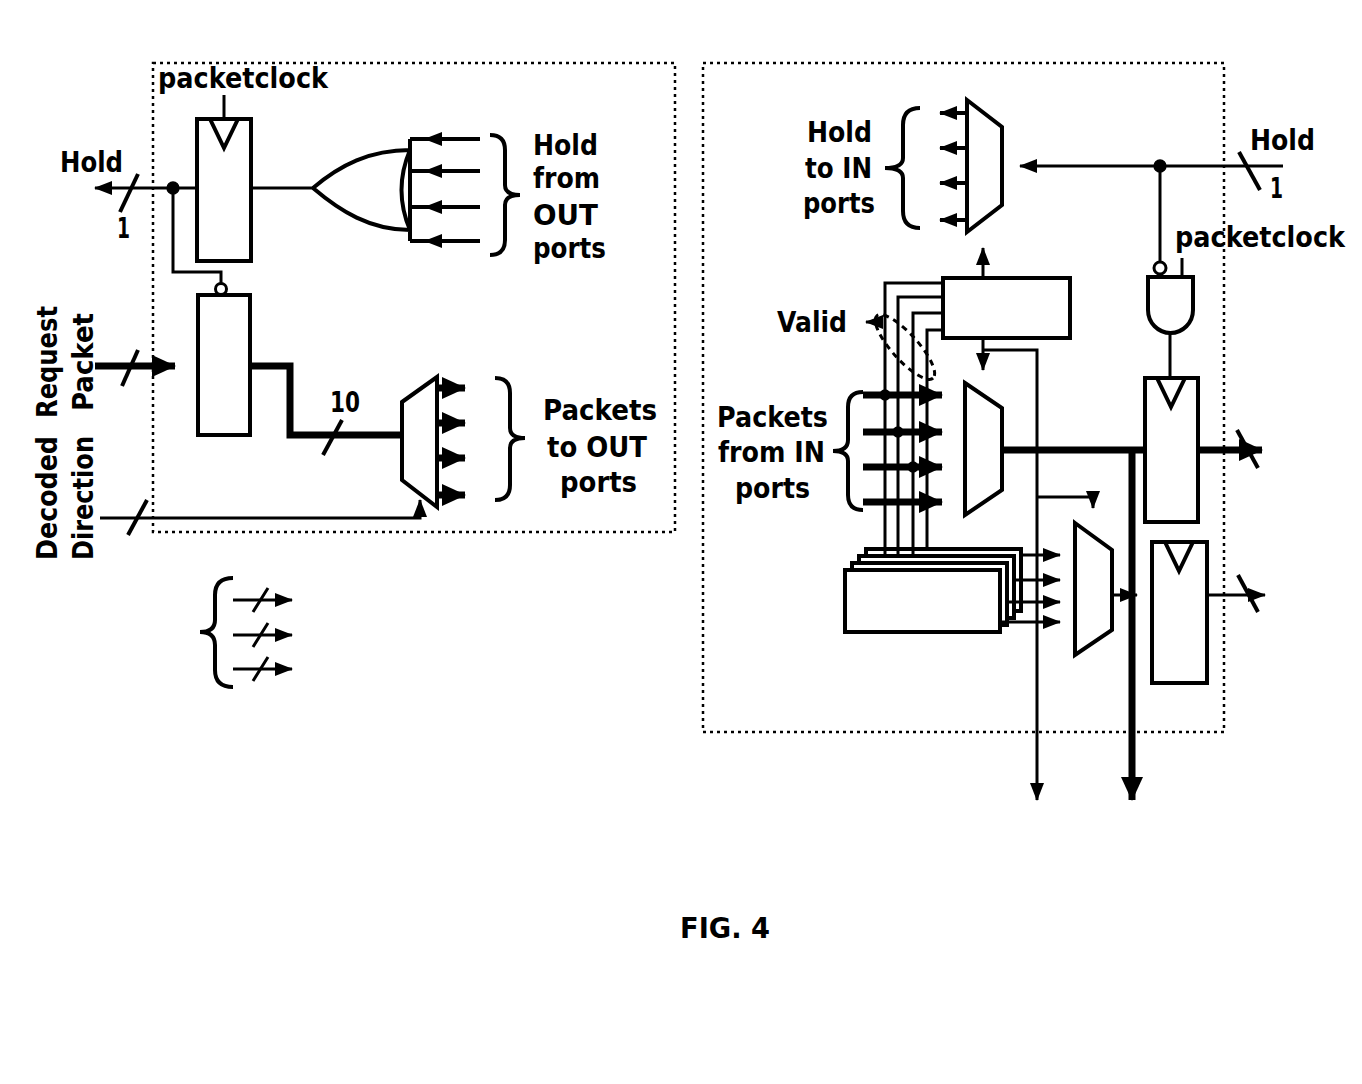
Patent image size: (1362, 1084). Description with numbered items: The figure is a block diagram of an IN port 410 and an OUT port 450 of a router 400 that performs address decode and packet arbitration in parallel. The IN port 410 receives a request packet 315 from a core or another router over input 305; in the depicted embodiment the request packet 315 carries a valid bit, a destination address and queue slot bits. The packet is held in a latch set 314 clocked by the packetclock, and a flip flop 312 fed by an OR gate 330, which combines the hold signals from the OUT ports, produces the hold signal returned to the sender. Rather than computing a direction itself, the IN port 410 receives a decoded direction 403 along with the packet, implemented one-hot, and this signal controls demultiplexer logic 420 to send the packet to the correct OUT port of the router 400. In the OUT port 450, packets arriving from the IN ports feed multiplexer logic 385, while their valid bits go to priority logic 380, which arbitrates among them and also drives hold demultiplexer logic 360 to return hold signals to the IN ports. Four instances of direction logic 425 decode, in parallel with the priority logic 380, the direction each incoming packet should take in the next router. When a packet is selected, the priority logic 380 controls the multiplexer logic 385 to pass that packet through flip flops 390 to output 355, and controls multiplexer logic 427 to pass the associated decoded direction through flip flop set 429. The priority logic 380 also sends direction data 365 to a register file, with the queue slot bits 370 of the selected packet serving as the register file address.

The router 400 is at (635, 397).
The IN port 410 is at (558, 82).
The OUT port 450 is at (1090, 97).
The flip flop 312 is at (251, 150).
The OR gate 330 is at (333, 220).
The latch set 314 is at (251, 314).
The input 305 is at (103, 360).
The decoded direction 403 is at (103, 515).
The demultiplexer logic 420 is at (402, 482).
The request packet 315 is at (63, 630).
The hold demultiplexer logic 360 is at (988, 112).
The priority logic 380 is at (1005, 278).
The multiplexer logic 385 is at (987, 390).
The flip flops 390 is at (1200, 380).
The output 355 is at (1255, 442).
The direction logic 425 is at (845, 633).
The multiplexer logic 427 is at (1078, 655).
The flip flop set 429 is at (1178, 683).
The direction data 365 is at (918, 828).
The queue slot bits 370 is at (1255, 830).